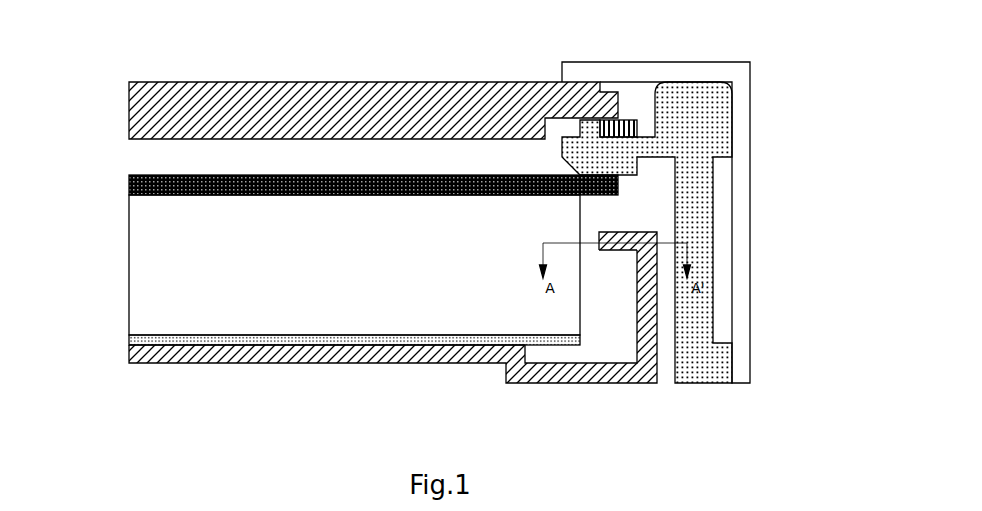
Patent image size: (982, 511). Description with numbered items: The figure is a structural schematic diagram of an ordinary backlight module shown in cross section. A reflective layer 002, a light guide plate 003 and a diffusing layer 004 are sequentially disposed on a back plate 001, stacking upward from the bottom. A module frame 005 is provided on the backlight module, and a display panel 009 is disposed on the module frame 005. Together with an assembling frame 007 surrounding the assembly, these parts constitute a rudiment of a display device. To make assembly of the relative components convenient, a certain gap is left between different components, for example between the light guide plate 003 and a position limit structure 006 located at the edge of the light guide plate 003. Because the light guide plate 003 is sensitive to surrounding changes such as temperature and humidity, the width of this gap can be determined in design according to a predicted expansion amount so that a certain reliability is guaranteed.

The back plate 001 is at (320, 365).
The reflective layer 002 is at (129, 342).
The light guide plate 003 is at (129, 268).
The diffusing layer 004 is at (129, 187).
The module frame 005 is at (703, 383).
The position limit structure 006 is at (640, 232).
The assembling frame 007 is at (750, 153).
The display panel 009 is at (393, 81).